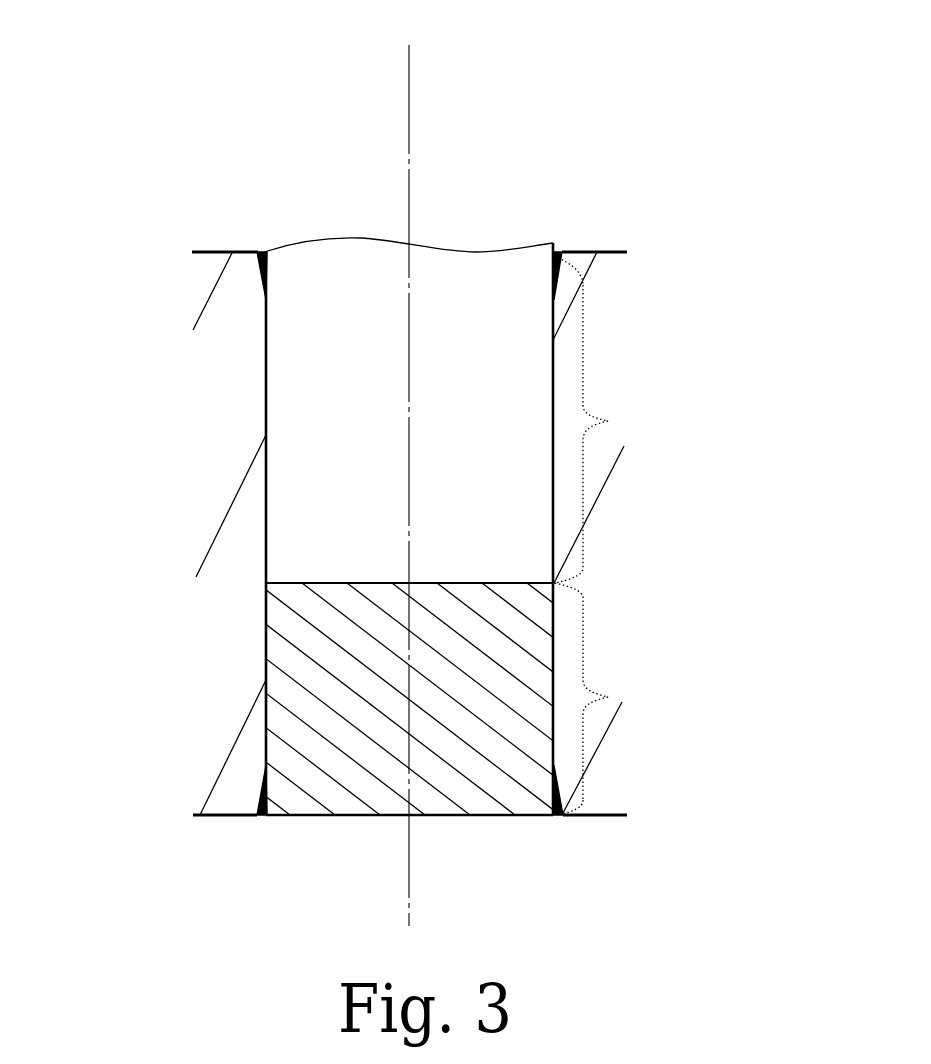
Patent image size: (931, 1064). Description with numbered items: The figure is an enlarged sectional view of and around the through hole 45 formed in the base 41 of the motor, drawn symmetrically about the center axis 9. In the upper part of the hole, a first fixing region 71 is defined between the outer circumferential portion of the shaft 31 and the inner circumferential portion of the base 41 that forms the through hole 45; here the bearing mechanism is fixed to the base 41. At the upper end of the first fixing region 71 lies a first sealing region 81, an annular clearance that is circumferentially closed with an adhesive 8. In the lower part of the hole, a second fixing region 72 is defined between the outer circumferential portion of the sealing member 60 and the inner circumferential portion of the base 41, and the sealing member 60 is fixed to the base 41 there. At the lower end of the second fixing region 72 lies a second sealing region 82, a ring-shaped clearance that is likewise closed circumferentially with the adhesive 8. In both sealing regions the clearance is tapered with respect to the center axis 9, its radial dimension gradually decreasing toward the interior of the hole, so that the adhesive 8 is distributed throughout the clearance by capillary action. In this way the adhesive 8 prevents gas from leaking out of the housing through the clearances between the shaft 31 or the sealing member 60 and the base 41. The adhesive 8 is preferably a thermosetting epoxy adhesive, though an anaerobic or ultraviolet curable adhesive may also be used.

The center axis 9 is at (407, 62).
The through hole 45 is at (348, 290).
The shaft 31 is at (535, 277).
The adhesive 8 is at (557, 252).
The first sealing region 81 is at (561, 278).
The second sealing region 82 is at (560, 782).
The first fixing region 71 is at (613, 421).
The second fixing region 72 is at (613, 697).
The sealing member 60 is at (333, 803).
The base 41 is at (223, 690).